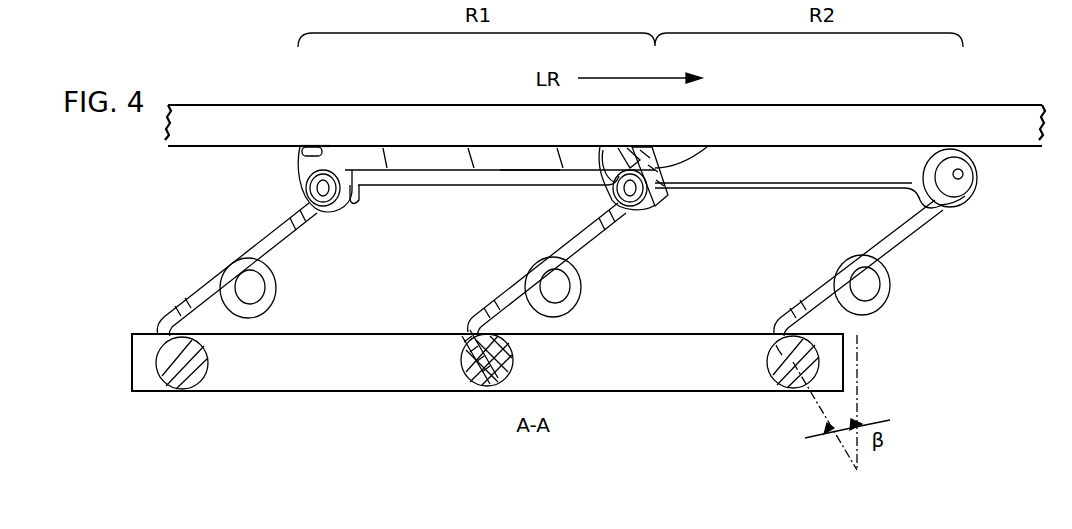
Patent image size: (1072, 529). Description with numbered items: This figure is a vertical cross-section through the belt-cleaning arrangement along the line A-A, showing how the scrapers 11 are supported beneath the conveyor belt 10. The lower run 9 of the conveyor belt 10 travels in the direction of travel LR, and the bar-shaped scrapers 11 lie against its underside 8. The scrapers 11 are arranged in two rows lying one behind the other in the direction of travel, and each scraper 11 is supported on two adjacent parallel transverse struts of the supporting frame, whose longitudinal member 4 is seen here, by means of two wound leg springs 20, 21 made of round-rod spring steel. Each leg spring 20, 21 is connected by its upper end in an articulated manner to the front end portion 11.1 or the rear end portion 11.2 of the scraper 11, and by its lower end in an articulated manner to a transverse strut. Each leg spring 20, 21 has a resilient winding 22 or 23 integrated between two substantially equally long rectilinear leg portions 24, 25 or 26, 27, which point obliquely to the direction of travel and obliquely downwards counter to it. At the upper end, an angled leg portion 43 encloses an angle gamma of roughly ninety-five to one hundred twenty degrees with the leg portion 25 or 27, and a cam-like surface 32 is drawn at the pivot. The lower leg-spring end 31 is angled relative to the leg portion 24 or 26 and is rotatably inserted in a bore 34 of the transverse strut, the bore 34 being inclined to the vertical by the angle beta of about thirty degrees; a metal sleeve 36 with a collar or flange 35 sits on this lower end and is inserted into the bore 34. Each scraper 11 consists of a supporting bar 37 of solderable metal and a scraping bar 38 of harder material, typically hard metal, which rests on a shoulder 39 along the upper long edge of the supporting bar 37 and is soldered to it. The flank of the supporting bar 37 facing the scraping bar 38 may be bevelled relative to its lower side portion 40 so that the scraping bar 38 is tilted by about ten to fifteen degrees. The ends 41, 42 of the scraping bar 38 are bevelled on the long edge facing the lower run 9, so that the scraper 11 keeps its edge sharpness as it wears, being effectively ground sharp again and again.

The longitudinal member 4 is at (280, 376).
The underside 8 is at (186, 150).
The lower run 9 is at (872, 118).
The conveyor belt 10 is at (1002, 104).
The scraper 11 is at (492, 180).
The front end portion 11.1 is at (348, 206).
The rear end portion 11.2 is at (645, 208).
The leg spring 20 is at (210, 275).
The leg spring 21 is at (916, 214).
The resilient winding 22 is at (276, 293).
The resilient winding 23 is at (882, 300).
The leg portion 24 is at (165, 299).
The leg portion 25 is at (259, 244).
The leg portion 26 is at (802, 294).
The leg portion 27 is at (868, 240).
The lower leg-spring end 31 is at (760, 338).
The cam surface 32 is at (606, 160).
The bore 34 is at (506, 358).
The collar or flange 35 is at (160, 342).
The metal sleeve 36 is at (466, 355).
The supporting bar 37 is at (410, 180).
The scraping bar 38 is at (322, 160).
The shoulder 39 is at (690, 168).
The side portion 40 is at (520, 178).
The end of the scraping bar 41 is at (300, 146).
The end of the scraping bar 42 is at (625, 150).
The angled leg portion 43 is at (962, 206).